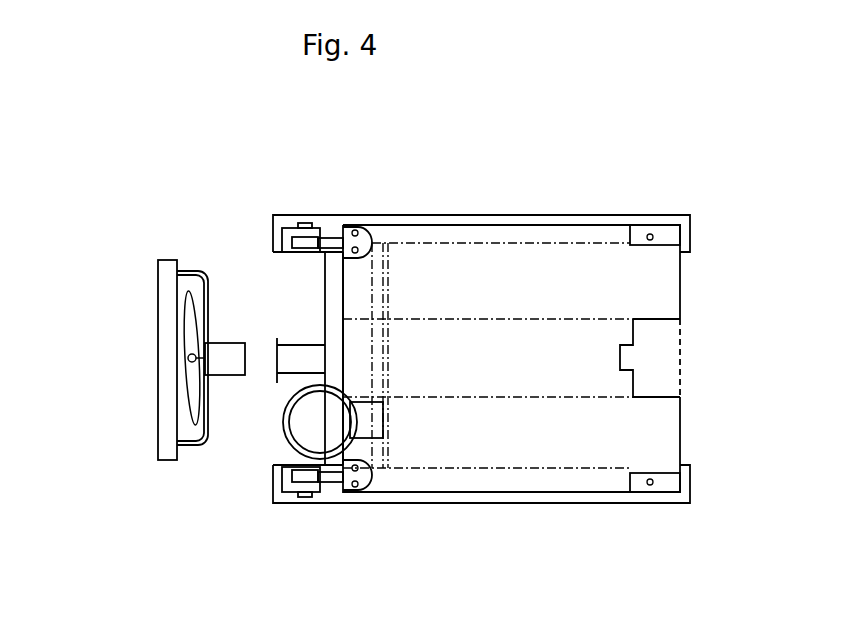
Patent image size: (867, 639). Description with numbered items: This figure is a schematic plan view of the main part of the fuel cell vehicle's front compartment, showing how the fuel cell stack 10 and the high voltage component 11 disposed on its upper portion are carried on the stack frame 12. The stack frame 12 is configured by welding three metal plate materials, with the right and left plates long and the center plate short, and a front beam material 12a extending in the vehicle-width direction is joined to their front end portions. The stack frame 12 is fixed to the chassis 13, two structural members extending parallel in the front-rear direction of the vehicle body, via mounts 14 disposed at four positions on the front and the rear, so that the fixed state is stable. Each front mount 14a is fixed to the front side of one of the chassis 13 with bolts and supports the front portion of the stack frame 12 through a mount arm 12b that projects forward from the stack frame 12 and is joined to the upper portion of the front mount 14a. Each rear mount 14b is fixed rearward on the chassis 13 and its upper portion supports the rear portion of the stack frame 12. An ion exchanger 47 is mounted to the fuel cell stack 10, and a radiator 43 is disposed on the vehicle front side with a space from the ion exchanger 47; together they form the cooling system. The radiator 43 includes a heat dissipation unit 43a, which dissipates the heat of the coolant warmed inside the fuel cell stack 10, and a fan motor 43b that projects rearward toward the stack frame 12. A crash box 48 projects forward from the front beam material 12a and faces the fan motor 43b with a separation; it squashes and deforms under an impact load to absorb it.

The fuel cell stack 10 is at (488, 293).
The high voltage component 11 is at (510, 243).
The stack frame 12 is at (565, 305).
The front beam material 12a is at (337, 297).
The mount arm 12b is at (328, 243).
The chassis 13 is at (428, 222).
The mount 14 is at (292, 243).
The front mount 14a is at (295, 240).
The rear mount 14b is at (640, 226).
The radiator 43 is at (141, 353).
The heat dissipation unit 43a is at (160, 450).
The fan motor 43b is at (225, 372).
The ion exchanger 47 is at (270, 445).
The crash box 48 is at (293, 358).